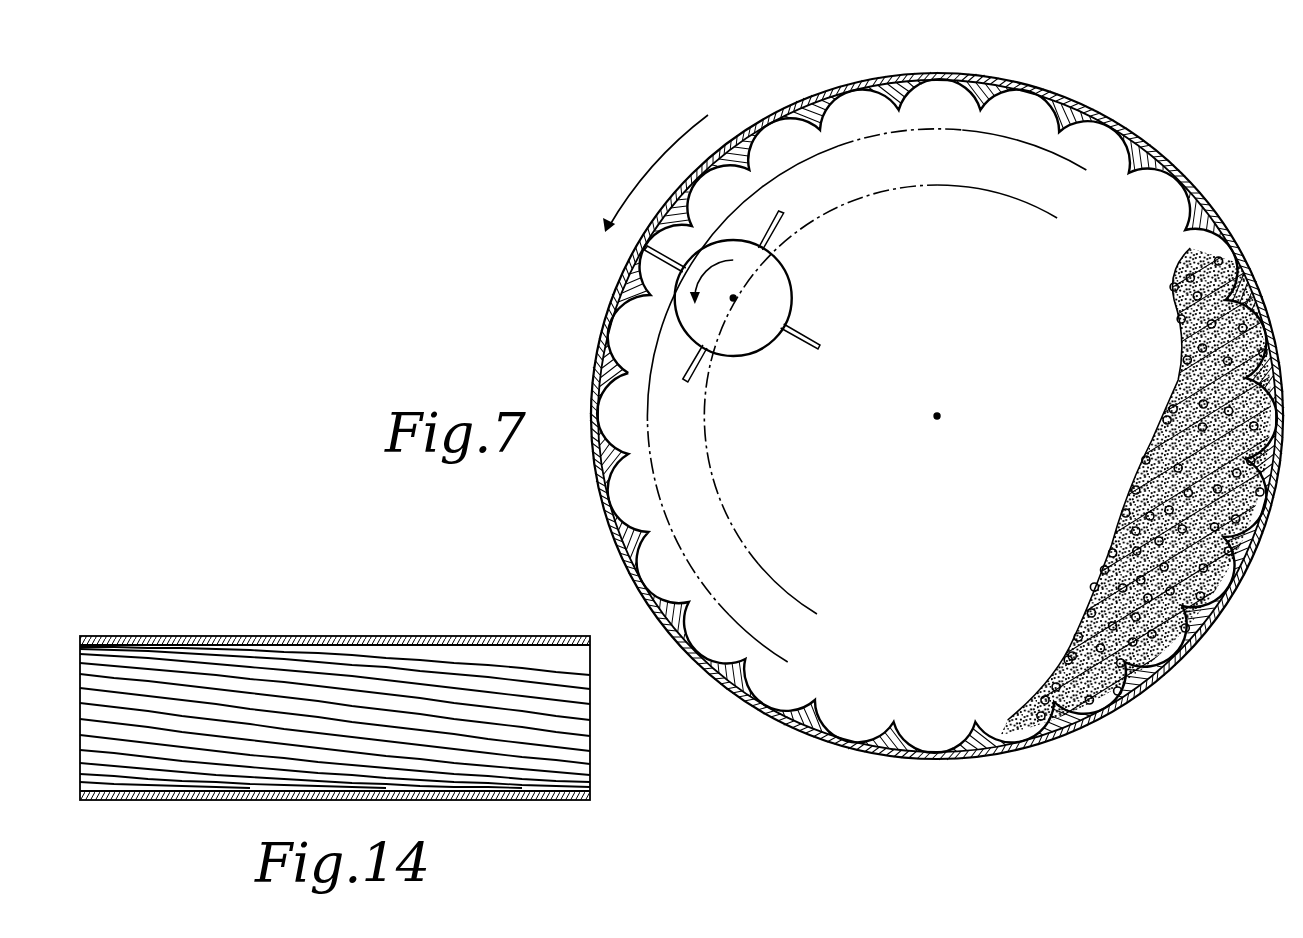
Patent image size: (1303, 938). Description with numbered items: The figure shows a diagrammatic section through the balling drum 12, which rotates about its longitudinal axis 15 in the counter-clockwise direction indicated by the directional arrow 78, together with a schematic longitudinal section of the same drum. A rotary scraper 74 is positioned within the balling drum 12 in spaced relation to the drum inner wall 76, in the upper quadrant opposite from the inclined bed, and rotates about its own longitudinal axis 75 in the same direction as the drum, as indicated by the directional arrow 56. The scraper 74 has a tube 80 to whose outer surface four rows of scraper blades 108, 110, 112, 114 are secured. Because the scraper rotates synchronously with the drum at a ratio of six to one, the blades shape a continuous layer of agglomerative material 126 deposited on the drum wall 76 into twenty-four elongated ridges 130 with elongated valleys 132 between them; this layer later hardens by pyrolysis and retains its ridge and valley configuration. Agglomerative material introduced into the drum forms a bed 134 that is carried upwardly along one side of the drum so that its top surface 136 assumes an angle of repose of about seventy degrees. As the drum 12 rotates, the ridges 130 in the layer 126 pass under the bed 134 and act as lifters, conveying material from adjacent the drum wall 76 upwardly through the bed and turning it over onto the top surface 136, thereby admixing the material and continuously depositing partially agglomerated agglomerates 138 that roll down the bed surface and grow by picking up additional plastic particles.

In FIG. 7, the balling drum 12 is at (1170, 134).
In FIG. 14, the balling drum 12 is at (341, 629).
In FIG. 7, the longitudinal axis 15 is at (940, 414).
In FIG. 7, the directional arrow 56 is at (720, 296).
In FIG. 7, the scraper 74 is at (803, 285).
In FIG. 7, the longitudinal axis 75 is at (738, 299).
In FIG. 7, the drum inner wall 76 is at (808, 116).
In FIG. 14, the drum inner wall 76 is at (229, 648).
In FIG. 7, the directional arrow 78 is at (662, 157).
In FIG. 7, the tube 80 is at (770, 347).
In FIG. 7, the row of scraper blades 108 is at (787, 238).
In FIG. 7, the row of scraper blades 110 is at (640, 258).
In FIG. 7, the row of scraper blades 112 is at (698, 378).
In FIG. 7, the row of scraper blades 114 is at (814, 329).
In FIG. 7, the layer of agglomerative material 126 is at (1003, 84).
In FIG. 7, the elongated ridges 130 is at (893, 133).
In FIG. 14, the elongated ridges 130 is at (577, 720).
In FIG. 7, the elongated valleys 132 is at (939, 86).
In FIG. 14, the elongated valleys 132 is at (577, 752).
In FIG. 7, the bed of agglomerative material 134 is at (1126, 455).
In FIG. 7, the top surface 136 is at (1112, 530).
In FIG. 7, the partially agglomerated agglomerates 138 is at (1170, 426).